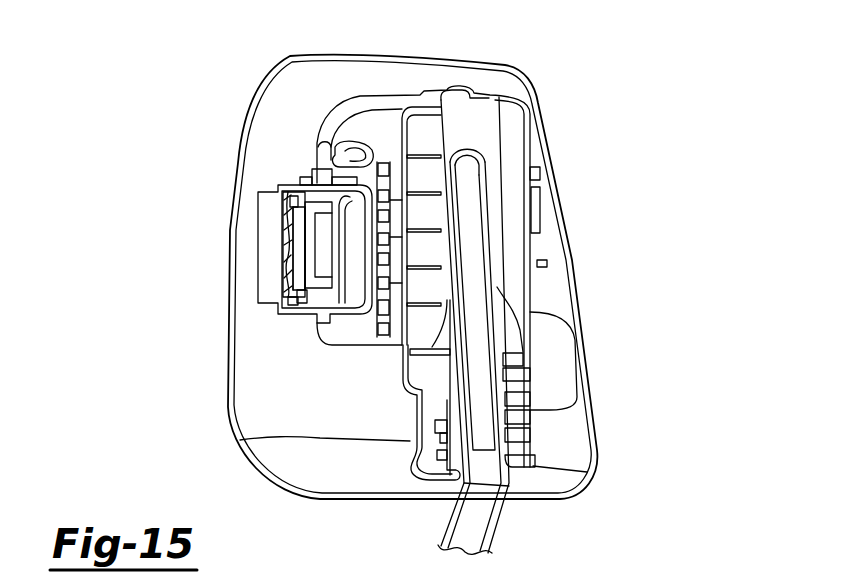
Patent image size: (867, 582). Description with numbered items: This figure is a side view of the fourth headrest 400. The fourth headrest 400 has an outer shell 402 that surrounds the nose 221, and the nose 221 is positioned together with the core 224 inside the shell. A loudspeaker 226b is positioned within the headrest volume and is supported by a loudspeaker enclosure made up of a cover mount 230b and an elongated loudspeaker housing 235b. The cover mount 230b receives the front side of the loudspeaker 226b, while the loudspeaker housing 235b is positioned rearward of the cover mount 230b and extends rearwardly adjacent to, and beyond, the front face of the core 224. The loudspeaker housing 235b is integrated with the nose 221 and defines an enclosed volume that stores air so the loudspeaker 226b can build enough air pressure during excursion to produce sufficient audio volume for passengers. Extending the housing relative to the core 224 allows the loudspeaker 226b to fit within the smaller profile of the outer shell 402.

The fourth headrest 400 is at (606, 46).
The outer shell 402 is at (548, 142).
The nose 221 is at (377, 133).
The core 224 is at (455, 132).
The cover mount 230b is at (293, 196).
The loudspeaker 226b is at (287, 248).
The loudspeaker housing 235b is at (348, 313).